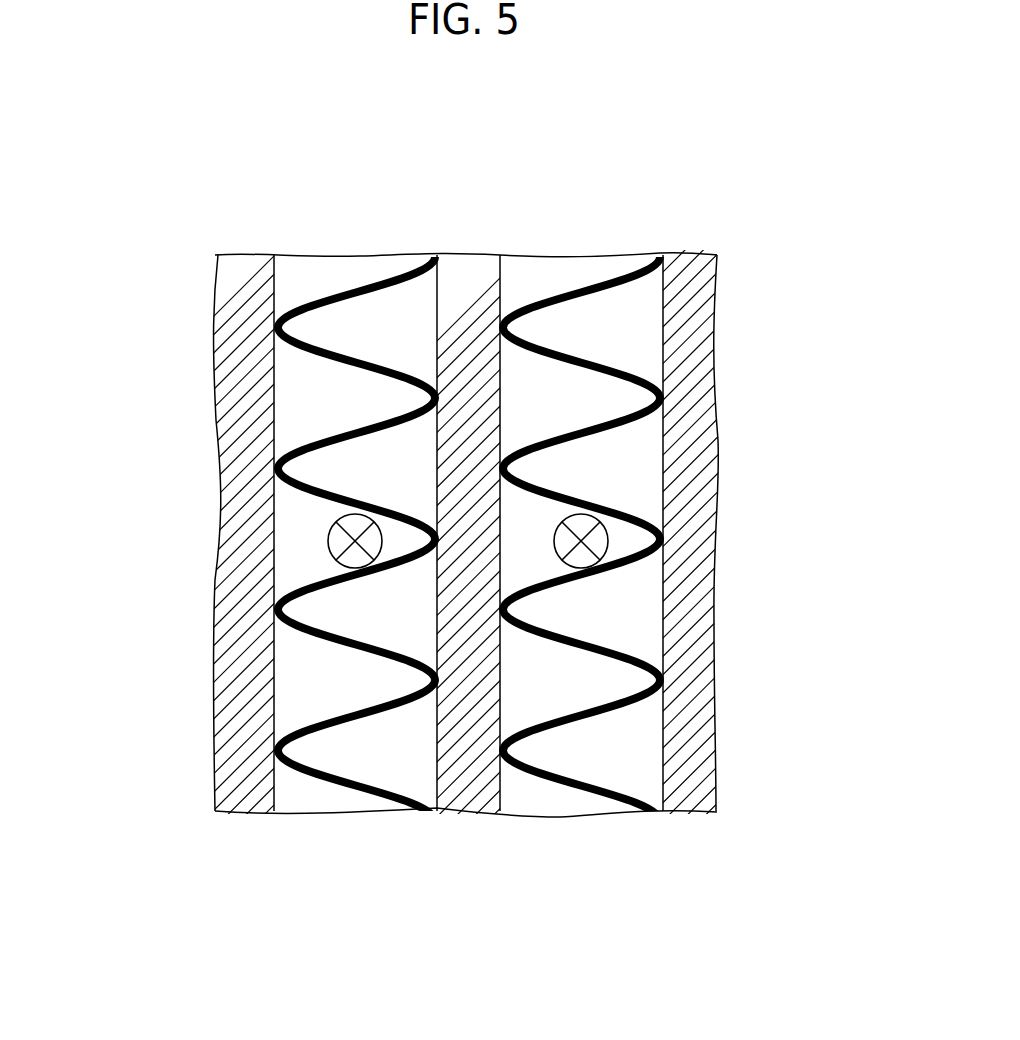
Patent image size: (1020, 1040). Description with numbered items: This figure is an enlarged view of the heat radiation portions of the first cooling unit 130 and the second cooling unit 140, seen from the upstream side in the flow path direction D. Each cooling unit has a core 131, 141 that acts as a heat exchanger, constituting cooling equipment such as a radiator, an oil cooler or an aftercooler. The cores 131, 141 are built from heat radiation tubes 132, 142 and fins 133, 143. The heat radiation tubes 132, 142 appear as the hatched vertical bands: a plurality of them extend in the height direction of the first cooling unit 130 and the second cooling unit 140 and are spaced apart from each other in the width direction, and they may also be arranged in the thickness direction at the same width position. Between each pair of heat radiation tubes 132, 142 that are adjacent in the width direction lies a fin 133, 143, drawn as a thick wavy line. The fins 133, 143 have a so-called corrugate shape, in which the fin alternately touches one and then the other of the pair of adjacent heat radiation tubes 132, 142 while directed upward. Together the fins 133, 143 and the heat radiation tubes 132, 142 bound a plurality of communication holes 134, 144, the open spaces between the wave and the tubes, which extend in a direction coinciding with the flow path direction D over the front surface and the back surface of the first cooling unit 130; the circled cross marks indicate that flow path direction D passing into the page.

The first cooling unit 130 is at (510, 495).
The second cooling unit 140 is at (662, 179).
The core 131 is at (510, 508).
The core 141 is at (667, 219).
The heat radiation tube 132 is at (510, 474).
The heat radiation tube 142 is at (460, 273).
The fin 133 is at (469, 491).
The fin 143 is at (357, 288).
The communication hole 134 is at (362, 574).
The communication hole 144 is at (337, 412).
The flow path direction D is at (327, 547).